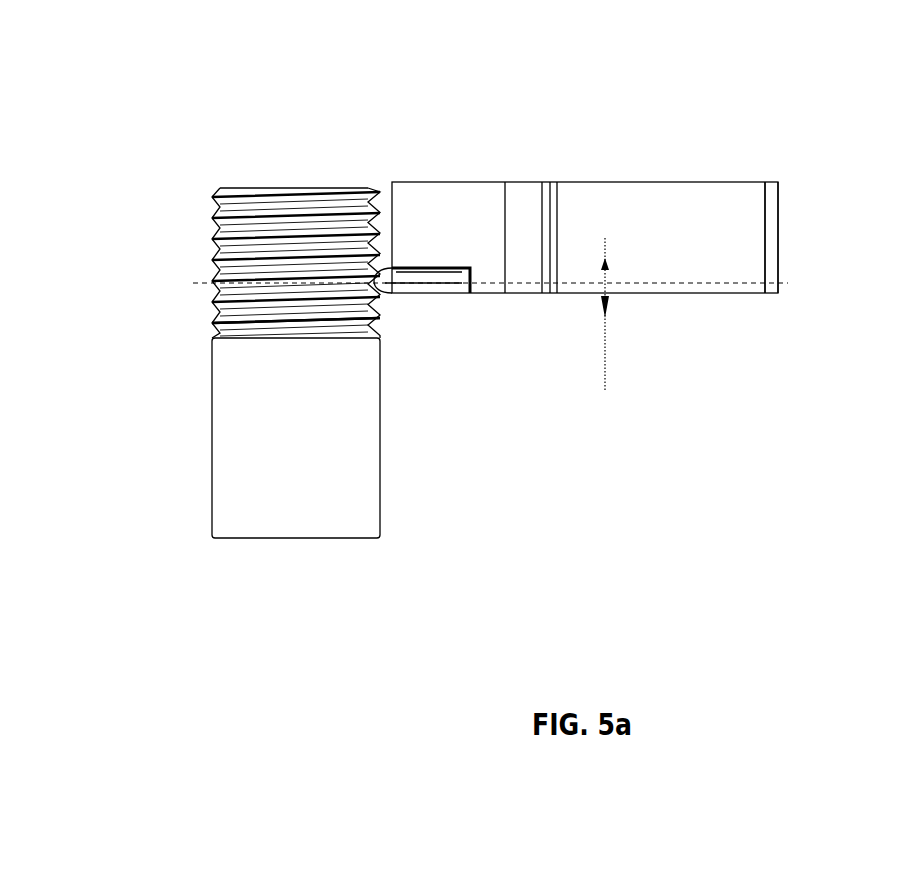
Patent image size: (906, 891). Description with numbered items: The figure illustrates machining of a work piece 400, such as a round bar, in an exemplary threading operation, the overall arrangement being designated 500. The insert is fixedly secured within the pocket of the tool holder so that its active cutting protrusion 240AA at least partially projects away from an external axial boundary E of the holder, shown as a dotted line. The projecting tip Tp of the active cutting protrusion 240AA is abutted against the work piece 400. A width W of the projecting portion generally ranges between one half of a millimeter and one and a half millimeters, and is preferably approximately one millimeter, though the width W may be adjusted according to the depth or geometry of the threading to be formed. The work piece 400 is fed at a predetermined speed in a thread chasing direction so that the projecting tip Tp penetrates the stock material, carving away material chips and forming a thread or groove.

The connector assembly 500 is at (200, 115).
The work piece 400 is at (212, 223).
The active cutting protrusion 240AA is at (380, 278).
The projecting tip Tp is at (308, 318).
The width of projecting portion W is at (621, 314).
The external axial boundary E is at (785, 237).